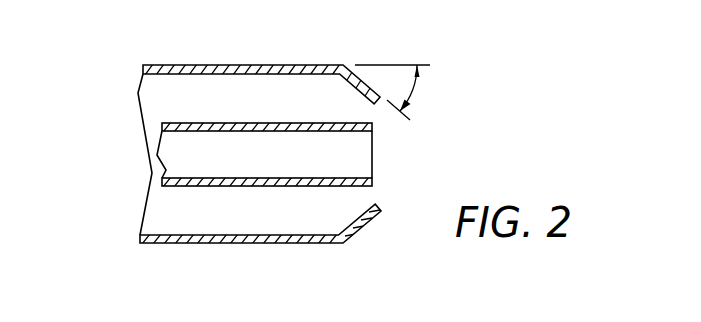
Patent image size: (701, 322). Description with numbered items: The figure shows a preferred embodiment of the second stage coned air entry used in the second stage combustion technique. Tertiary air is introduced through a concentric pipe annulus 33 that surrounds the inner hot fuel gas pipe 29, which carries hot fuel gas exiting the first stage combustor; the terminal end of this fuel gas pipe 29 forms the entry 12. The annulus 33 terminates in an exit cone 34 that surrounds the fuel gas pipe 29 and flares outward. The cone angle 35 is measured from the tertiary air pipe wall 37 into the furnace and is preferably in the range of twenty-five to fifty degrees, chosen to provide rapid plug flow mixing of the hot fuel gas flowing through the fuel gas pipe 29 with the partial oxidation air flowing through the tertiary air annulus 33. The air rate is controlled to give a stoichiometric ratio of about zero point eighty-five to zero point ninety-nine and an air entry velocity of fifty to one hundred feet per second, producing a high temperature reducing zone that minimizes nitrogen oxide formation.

The entry 12 is at (295, 172).
The inner hot fuel gas pipe 29 is at (320, 187).
The concentric pipe annulus 33 is at (195, 98).
The exit cone 34 is at (363, 225).
The cone angle 35 is at (413, 86).
The tertiary air pipe wall 37 is at (253, 64).